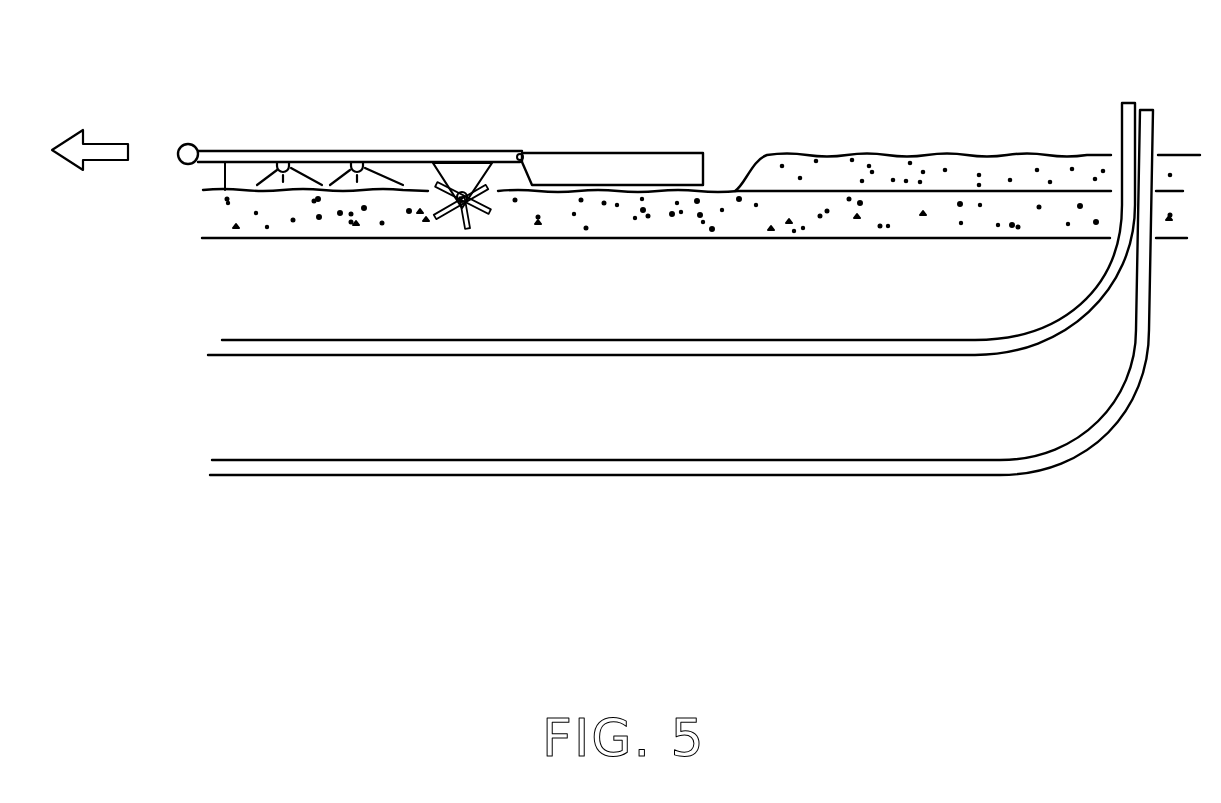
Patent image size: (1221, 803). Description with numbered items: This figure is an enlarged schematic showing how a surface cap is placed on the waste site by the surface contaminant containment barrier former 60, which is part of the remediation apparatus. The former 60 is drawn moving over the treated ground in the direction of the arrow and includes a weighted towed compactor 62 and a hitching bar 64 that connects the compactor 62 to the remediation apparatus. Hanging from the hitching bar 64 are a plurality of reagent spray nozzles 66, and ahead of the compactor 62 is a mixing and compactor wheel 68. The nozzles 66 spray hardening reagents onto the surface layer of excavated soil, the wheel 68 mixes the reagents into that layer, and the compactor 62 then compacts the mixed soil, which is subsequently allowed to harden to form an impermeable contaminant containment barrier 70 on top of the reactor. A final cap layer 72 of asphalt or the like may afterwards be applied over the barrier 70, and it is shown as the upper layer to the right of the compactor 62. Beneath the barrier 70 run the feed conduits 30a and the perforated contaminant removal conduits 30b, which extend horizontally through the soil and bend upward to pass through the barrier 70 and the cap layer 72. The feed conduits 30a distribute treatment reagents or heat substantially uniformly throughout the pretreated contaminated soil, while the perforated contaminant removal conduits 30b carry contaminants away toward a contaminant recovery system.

The surface contaminant containment barrier former 60 is at (420, 153).
The weighted towed compactor 62 is at (623, 167).
The hitching bar 64 is at (195, 150).
The reagent spray nozzles 66 is at (285, 162).
The mixing and compactor wheel 68 is at (470, 168).
The impermeable contaminant containment barrier 70 is at (355, 223).
The final cap layer 72 is at (913, 161).
The feed conduits 30a is at (622, 466).
The perforated contaminant removal conduits 30b is at (637, 347).